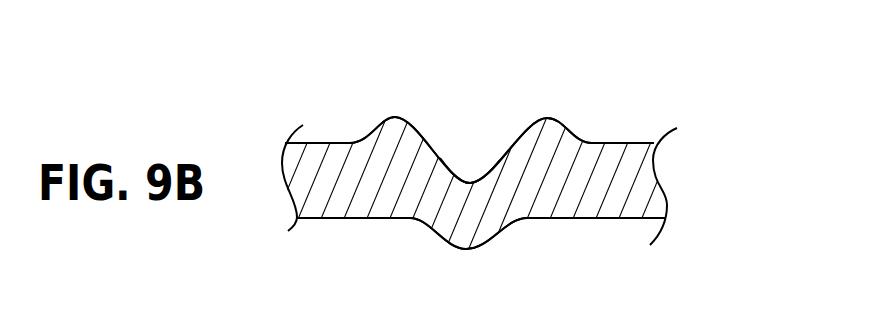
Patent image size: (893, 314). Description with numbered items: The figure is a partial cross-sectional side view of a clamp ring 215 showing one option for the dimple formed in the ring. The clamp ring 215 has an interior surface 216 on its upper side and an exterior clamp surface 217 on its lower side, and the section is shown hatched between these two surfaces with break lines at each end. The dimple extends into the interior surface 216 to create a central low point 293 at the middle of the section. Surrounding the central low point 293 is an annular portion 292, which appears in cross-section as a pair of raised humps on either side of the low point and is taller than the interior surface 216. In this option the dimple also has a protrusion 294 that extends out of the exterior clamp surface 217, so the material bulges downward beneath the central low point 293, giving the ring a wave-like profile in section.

The clamp ring 215 is at (774, 58).
The interior surface 216 is at (642, 143).
The exterior clamp surface 217 is at (627, 218).
The annular portion 292 is at (395, 117).
The central low point 293 is at (457, 258).
The protrusion 294 is at (466, 249).